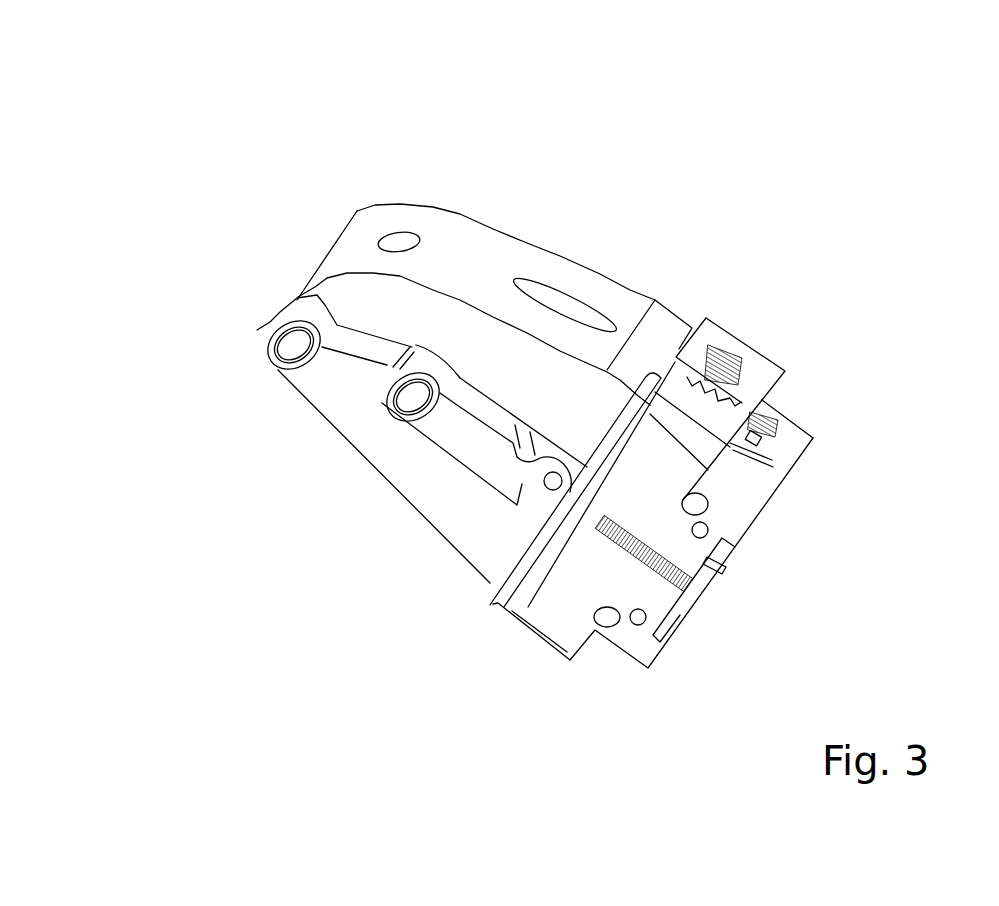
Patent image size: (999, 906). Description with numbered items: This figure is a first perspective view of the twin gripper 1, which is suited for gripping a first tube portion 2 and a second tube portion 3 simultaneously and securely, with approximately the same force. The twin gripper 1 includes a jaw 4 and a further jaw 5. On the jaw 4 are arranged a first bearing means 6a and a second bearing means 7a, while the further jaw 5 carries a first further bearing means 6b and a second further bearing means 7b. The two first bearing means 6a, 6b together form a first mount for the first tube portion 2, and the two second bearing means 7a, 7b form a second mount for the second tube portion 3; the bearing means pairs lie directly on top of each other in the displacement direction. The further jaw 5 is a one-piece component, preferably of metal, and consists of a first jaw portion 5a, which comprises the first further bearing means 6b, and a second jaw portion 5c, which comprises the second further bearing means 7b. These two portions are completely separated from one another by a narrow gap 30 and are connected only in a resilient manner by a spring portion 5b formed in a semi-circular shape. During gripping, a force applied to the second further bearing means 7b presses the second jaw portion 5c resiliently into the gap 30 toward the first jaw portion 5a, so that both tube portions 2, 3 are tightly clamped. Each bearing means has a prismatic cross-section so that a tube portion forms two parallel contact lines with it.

The twin gripper 1 is at (763, 204).
The first tube portion 2 is at (280, 346).
The second tube portion 3 is at (423, 395).
The jaw 4 is at (467, 323).
The further jaw 5 is at (512, 540).
The first jaw portion 5a is at (347, 400).
The spring portion 5b is at (562, 488).
The second jaw portion 5c is at (517, 480).
The first bearing means 6a is at (317, 298).
The first further bearing means 6b is at (283, 370).
The second bearing means 7a is at (432, 344).
The second further bearing means 7b is at (455, 405).
The narrow gap 30 is at (495, 488).